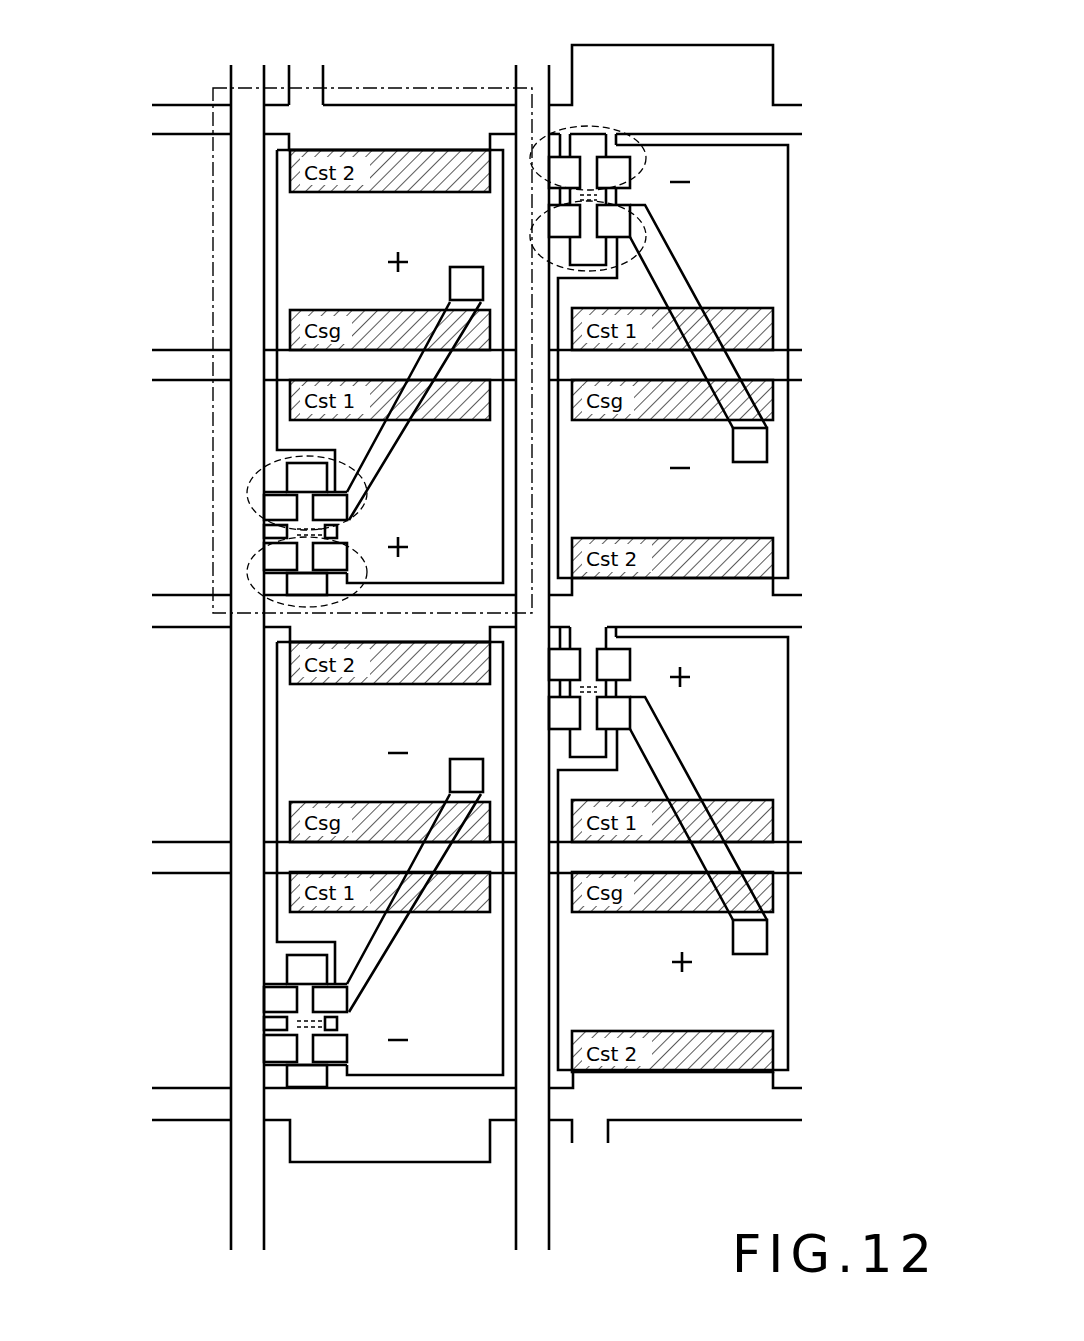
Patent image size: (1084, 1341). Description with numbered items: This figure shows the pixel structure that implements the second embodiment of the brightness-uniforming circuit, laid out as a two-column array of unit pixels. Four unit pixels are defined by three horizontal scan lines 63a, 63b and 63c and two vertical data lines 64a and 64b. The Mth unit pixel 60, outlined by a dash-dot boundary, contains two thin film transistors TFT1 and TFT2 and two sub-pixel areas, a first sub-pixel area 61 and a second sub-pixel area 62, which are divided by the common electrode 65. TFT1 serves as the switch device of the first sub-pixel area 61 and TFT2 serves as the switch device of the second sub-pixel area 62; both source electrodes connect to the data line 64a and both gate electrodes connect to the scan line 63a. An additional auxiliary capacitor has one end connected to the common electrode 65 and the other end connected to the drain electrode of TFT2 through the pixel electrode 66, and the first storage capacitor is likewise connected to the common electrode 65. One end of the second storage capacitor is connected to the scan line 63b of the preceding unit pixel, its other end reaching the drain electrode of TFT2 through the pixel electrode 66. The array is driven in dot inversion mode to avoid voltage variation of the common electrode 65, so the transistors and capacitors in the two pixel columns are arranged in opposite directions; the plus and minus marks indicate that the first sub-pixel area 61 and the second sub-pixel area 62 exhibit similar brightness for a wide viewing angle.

The unit pixel 60 is at (403, 82).
The first sub-pixel area 61 is at (482, 522).
The second sub-pixel area 62 is at (482, 242).
The scan line 63a is at (164, 618).
The scan line 63b is at (164, 126).
The scan line 63c is at (164, 1110).
The data line 64a is at (247, 67).
The data line 64b is at (530, 67).
The common electrode 65 is at (166, 372).
The pixel electrode 66 is at (298, 281).
The first thin film transistor TFT1 is at (237, 573).
The second thin film transistor TFT2 is at (237, 494).